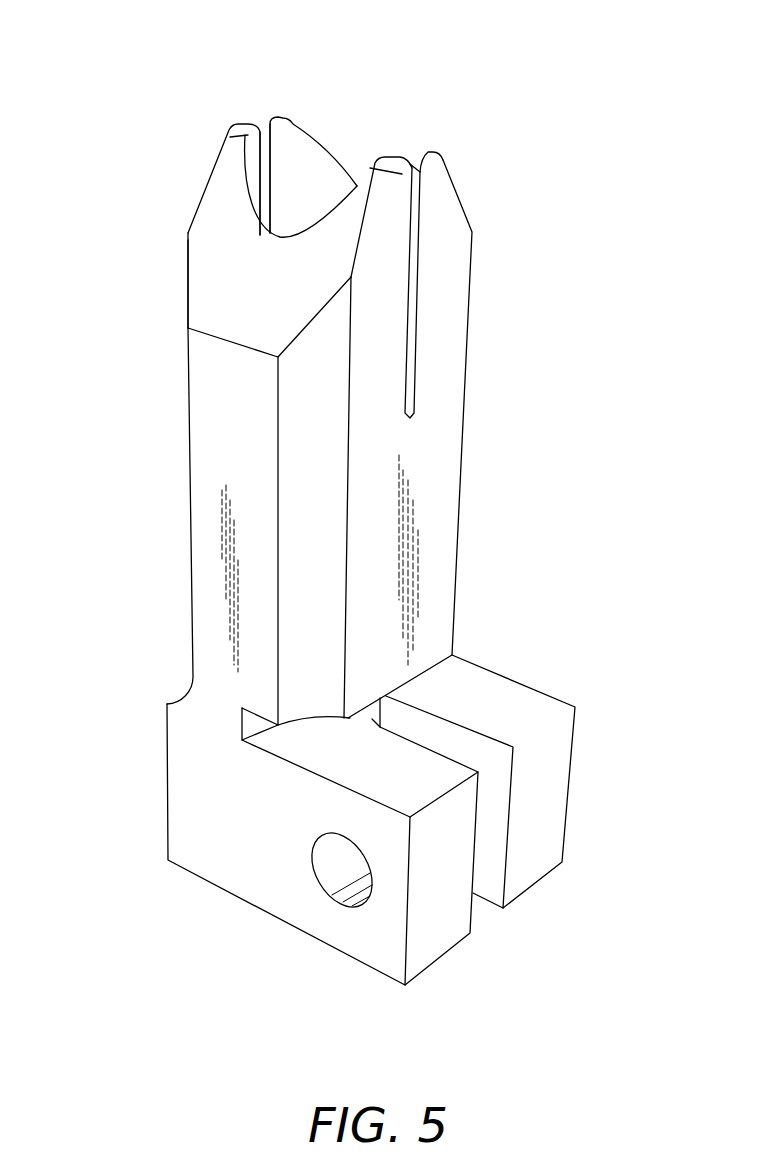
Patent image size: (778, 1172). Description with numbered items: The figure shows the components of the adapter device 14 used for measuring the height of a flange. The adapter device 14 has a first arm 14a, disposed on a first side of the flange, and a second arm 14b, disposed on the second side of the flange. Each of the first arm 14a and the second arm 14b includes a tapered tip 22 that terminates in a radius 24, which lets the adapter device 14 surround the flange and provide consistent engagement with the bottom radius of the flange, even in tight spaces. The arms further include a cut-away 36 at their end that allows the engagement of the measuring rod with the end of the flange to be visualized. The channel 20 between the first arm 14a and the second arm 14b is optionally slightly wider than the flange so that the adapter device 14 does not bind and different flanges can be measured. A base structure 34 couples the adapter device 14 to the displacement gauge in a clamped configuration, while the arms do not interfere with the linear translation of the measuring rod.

The adapter device 14 is at (457, 117).
The first arm 14a is at (478, 338).
The second arm 14b is at (177, 298).
The channel 20 is at (421, 267).
The tapered tip 22 is at (221, 270).
The radius 24 is at (243, 110).
The base structure 34 is at (547, 670).
The cut-away 36 is at (352, 147).